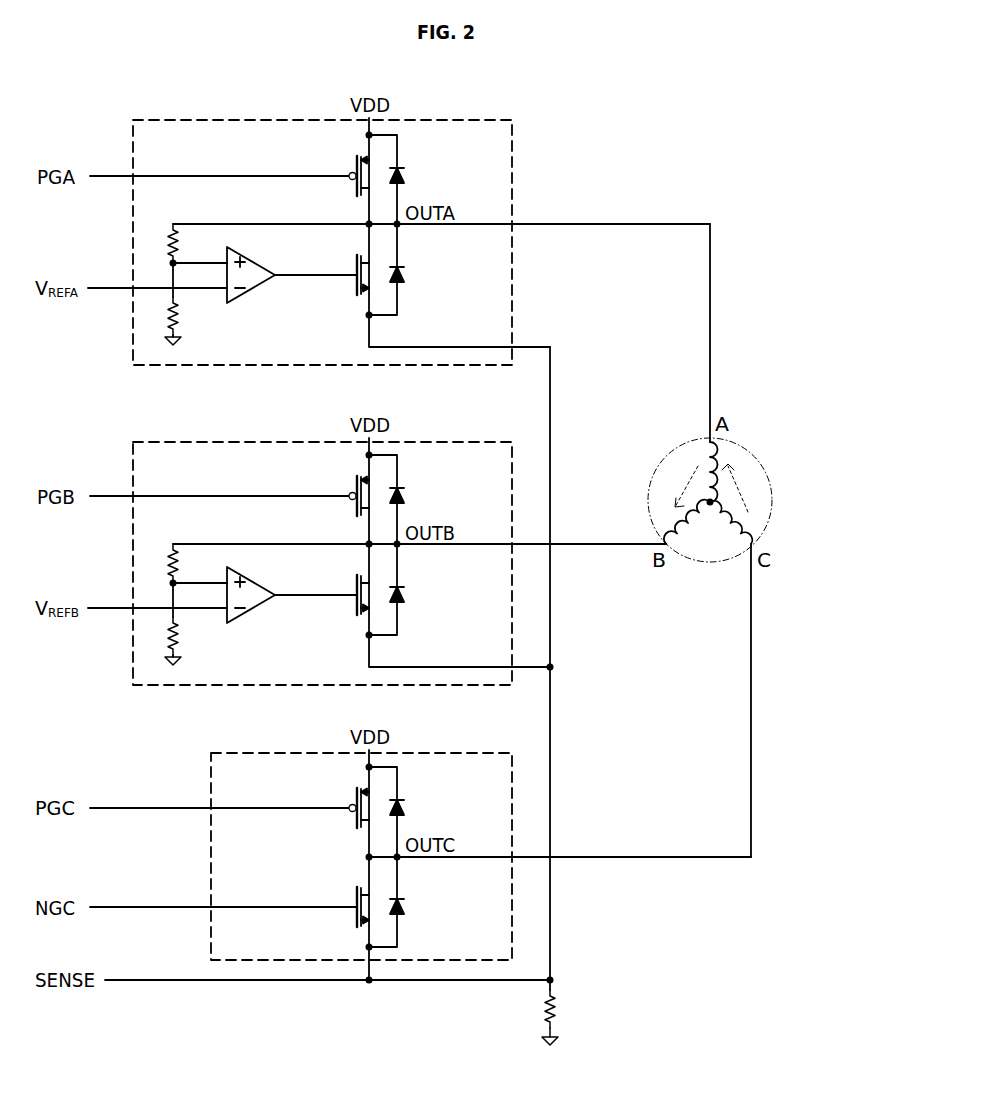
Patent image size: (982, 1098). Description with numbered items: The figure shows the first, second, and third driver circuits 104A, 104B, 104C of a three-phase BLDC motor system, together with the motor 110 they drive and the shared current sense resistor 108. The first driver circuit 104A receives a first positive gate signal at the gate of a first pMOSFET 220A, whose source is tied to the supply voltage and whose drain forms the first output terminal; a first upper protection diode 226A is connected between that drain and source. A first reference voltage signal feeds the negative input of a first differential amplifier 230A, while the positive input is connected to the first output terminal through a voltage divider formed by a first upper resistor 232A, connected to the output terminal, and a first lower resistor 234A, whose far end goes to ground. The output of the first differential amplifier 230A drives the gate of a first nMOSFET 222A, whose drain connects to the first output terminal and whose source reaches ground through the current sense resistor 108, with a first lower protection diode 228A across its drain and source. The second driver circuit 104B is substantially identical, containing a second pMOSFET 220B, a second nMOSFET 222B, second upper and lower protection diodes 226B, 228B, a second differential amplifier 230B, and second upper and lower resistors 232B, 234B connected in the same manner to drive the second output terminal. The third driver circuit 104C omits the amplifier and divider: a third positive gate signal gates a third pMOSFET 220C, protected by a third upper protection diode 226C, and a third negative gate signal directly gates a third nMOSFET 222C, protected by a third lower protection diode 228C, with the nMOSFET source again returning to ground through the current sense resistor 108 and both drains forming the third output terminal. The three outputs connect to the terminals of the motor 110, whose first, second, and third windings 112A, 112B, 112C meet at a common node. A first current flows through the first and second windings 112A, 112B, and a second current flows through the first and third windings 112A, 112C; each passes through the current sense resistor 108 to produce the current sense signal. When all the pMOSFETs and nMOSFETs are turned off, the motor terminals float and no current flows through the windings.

The first driver circuit 104A is at (215, 120).
The second driver circuit 104B is at (215, 442).
The third driver circuit 104C is at (280, 753).
The first pMOSFET 220A is at (357, 162).
The second pMOSFET 220B is at (357, 482).
The third pMOSFET 220C is at (357, 794).
The first nMOSFET 222A is at (357, 262).
The second nMOSFET 222B is at (357, 582).
The third nMOSFET 222C is at (357, 894).
The first upper protection diode 226A is at (402, 176).
The second upper protection diode 226B is at (402, 496).
The third upper protection diode 226C is at (402, 808).
The first lower protection diode 228A is at (404, 275).
The second lower protection diode 228B is at (404, 595).
The third lower protection diode 228C is at (404, 907).
The first differential amplifier 230A is at (247, 293).
The second differential amplifier 230B is at (250, 613).
The first upper resistor 232A is at (168, 242).
The second upper resistor 232B is at (168, 562).
The first lower resistor 234A is at (168, 310).
The second lower resistor 234B is at (168, 630).
The motor 110 is at (684, 442).
The first winding 112A is at (718, 455).
The second winding 112B is at (669, 528).
The third winding 112C is at (748, 531).
The current sense resistor 108 is at (555, 1008).